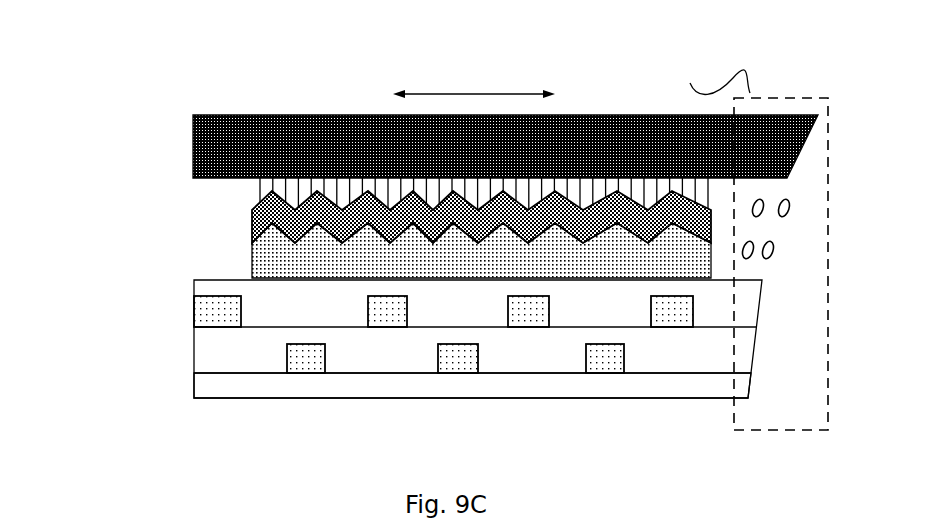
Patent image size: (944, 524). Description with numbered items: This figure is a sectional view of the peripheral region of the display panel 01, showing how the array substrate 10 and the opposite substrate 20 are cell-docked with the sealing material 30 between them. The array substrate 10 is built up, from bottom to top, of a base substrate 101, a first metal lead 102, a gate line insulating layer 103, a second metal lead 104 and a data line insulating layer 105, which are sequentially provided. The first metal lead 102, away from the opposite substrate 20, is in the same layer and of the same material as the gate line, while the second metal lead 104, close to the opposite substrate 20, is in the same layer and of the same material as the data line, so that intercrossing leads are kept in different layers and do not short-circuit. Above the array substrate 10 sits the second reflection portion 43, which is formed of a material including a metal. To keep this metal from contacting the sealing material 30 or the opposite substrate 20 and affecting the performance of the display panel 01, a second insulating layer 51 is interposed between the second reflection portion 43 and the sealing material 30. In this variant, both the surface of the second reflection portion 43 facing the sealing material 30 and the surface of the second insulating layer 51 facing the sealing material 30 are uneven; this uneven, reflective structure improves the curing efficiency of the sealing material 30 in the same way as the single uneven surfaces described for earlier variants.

The display panel 01 is at (174, 96).
The opposite substrate 20 is at (230, 148).
The second reflection portion 43 is at (260, 195).
The second insulating layer 51 is at (260, 222).
The sealing material 30 is at (260, 263).
The array substrate 10 is at (768, 282).
The base substrate 101 is at (208, 392).
The first metal lead 102 is at (287, 350).
The gate line insulating layer 103 is at (412, 345).
The second metal lead 104 is at (223, 318).
The data line insulating layer 105 is at (570, 308).